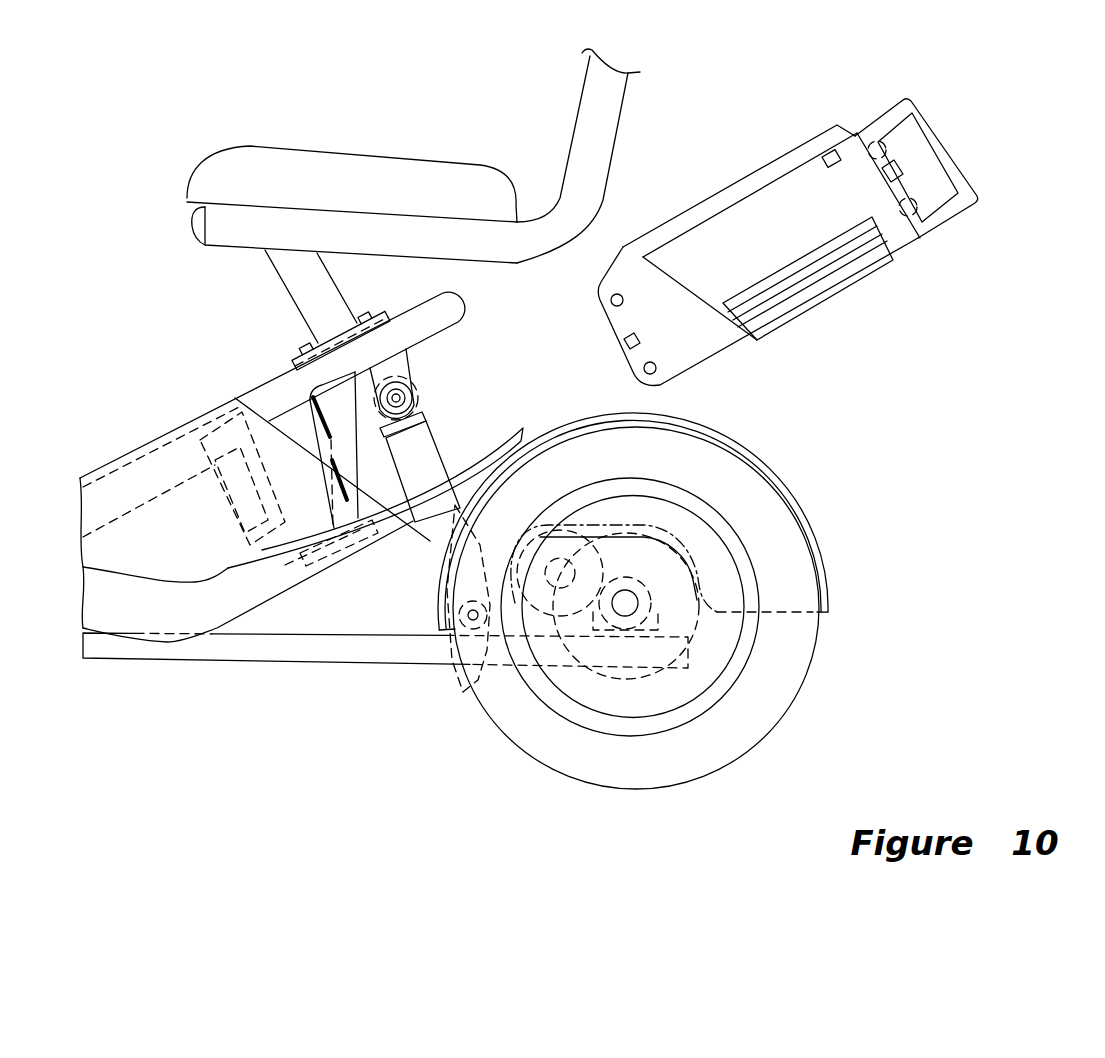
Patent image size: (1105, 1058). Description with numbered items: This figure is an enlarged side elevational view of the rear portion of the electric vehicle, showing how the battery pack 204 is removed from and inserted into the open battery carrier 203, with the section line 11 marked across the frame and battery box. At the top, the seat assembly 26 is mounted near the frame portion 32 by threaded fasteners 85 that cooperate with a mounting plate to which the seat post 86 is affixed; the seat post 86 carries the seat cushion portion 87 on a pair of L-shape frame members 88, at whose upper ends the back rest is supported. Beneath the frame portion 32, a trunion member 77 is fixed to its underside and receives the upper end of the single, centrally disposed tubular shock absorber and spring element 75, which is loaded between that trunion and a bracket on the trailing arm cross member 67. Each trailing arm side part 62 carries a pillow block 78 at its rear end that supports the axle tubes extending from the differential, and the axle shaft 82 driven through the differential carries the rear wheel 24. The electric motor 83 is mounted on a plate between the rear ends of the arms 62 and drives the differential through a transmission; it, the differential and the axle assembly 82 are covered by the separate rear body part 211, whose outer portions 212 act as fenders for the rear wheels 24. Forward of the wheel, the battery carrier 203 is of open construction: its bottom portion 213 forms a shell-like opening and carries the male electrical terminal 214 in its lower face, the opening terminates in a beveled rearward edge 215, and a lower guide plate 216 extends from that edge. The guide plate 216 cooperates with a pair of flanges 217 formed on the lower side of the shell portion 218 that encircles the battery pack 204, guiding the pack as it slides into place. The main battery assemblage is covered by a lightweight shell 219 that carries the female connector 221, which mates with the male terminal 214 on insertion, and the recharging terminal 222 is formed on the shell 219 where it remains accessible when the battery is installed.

The section line 11- 11 is at (277, 347).
The rear wheel 24 is at (763, 710).
The seat assembly 26 is at (635, 99).
The frame portion 32 is at (410, 297).
The trailing arm side part 62 is at (148, 658).
The trailing arm cross member 67 is at (457, 693).
The shock absorber and spring element 75 is at (447, 418).
The trunion member 77 is at (403, 370).
The pillow block 78 is at (695, 625).
The axle shaft 82 is at (628, 612).
The electric motor 83 is at (575, 613).
The threaded fasteners 85 is at (292, 363).
The seat post 86 is at (340, 283).
The seat cushion portion 87 is at (373, 152).
The L-shape frame members 88 is at (610, 172).
The battery carrier 203 is at (289, 577).
The battery pack 204 is at (875, 73).
The rear body part 211 is at (771, 454).
The outer portions 212 is at (820, 550).
The bottom portion 213 is at (237, 393).
The male electrical terminal 214 is at (270, 543).
The beveled rearward edge 215 is at (250, 393).
The lower guide plate 216 is at (511, 432).
The flanges 217 is at (850, 290).
The shell portion 218 is at (751, 153).
The lightweight shell 219 is at (697, 343).
The female connector 221 is at (957, 213).
The recharging terminal 222 is at (897, 180).